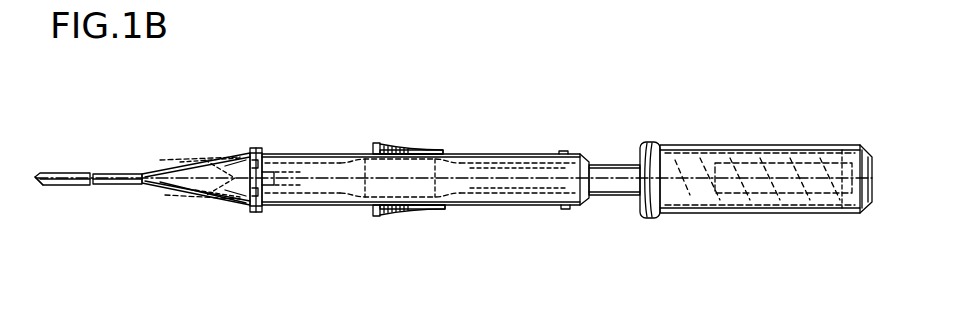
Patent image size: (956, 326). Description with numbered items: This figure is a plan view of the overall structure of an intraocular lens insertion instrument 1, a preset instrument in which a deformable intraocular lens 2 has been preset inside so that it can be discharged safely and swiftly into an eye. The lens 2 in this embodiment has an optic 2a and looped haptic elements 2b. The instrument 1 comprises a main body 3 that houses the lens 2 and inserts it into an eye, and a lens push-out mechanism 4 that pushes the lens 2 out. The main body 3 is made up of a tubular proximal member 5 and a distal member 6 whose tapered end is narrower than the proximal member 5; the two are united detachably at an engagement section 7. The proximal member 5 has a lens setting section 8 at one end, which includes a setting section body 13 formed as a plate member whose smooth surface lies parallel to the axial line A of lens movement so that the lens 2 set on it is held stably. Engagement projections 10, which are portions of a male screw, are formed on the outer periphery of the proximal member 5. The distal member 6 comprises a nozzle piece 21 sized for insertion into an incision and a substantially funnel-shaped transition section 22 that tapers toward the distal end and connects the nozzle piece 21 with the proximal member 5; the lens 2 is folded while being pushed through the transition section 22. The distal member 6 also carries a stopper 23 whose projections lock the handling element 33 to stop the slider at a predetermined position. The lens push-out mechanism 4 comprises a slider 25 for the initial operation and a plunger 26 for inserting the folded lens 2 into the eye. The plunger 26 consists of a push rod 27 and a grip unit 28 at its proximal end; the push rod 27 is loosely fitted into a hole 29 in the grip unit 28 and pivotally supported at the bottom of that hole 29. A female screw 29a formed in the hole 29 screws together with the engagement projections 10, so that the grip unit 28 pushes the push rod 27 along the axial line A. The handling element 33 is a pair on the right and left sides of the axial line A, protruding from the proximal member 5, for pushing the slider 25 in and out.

The intraocular lens insertion instrument 1 is at (712, 98).
The intraocular lens 2 is at (216, 160).
The optic 2a is at (218, 195).
The looped haptic elements 2b is at (190, 164).
The main body 3 is at (392, 126).
The lens push-out mechanism 4 is at (727, 136).
The proximal member 5 is at (456, 148).
The distal member 6 is at (157, 170).
The engagement section 7 is at (254, 160).
The lens setting section 8 is at (232, 198).
The engagement projections 10 is at (557, 206).
The setting section body 13 is at (262, 158).
The nozzle piece 21 is at (72, 172).
The transition section 22 is at (190, 203).
The stopper 23 is at (256, 212).
The slider 25 is at (349, 165).
The plunger 26 is at (493, 161).
The push rod 27 is at (299, 166).
The grip unit 28 is at (787, 145).
The hole 29 is at (708, 218).
The female screw 29a is at (772, 218).
The handling element 33 is at (378, 143).
The axial line of lens movement A is at (49, 176).